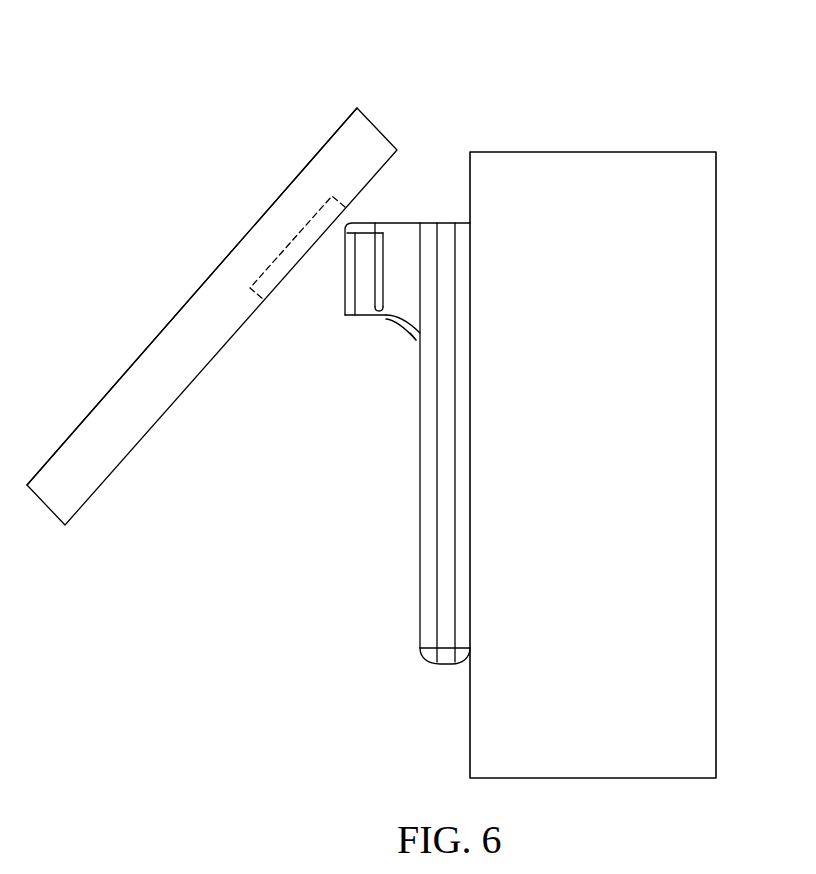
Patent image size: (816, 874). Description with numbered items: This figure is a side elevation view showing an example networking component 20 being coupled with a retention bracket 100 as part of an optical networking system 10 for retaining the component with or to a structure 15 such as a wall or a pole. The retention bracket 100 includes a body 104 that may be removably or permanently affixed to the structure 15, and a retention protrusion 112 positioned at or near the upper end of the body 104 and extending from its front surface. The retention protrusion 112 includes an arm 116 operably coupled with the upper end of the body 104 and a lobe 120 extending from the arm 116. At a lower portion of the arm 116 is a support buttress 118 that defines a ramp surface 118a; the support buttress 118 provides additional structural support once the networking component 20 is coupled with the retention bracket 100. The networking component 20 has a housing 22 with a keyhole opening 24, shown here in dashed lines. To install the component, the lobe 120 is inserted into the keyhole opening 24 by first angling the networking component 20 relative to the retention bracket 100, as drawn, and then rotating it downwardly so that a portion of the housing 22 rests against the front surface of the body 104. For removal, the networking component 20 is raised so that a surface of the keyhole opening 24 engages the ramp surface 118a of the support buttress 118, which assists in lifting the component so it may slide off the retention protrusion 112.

The optical networking system 10 is at (258, 56).
The structure 15 is at (593, 151).
The networking component 20 is at (203, 284).
The housing 22 is at (117, 408).
The keyhole opening 24 is at (310, 207).
The retention bracket 100 is at (430, 381).
The body 104 is at (445, 595).
The retention protrusion 112 is at (430, 288).
The arm 116 is at (398, 272).
The support buttress 118 is at (393, 313).
The ramp surface 118a is at (413, 334).
The lobe 120 is at (350, 296).